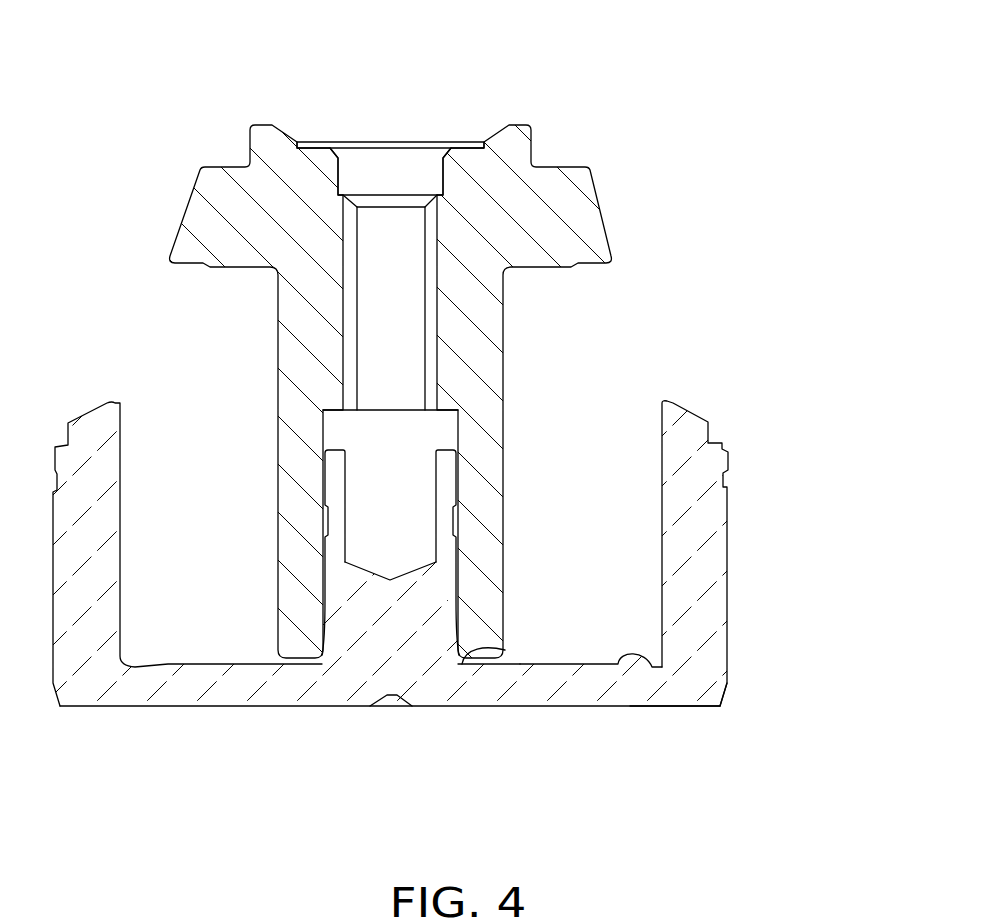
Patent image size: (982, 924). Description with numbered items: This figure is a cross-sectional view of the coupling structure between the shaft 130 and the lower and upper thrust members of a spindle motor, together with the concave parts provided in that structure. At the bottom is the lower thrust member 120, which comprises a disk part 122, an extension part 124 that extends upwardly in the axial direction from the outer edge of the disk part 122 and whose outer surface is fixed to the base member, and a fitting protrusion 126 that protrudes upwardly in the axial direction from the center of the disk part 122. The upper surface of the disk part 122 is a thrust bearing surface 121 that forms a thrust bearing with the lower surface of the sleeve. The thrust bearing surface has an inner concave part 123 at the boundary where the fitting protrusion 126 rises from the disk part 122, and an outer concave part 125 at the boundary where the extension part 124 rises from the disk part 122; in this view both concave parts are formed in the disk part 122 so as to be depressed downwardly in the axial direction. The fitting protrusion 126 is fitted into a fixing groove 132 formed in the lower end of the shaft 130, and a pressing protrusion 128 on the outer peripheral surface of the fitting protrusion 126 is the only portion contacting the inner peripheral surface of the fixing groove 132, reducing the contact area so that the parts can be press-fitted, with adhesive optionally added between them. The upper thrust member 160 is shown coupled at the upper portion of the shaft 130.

The lower thrust member 120 is at (471, 601).
The thrust bearing surface 121 is at (223, 660).
The disk part 122 is at (633, 683).
The inner concave part 123 is at (465, 657).
The extension part 124 is at (703, 543).
The outer concave part 125 is at (653, 664).
The fitting protrusion 126 is at (447, 493).
The pressing protrusion 128 is at (335, 478).
The shaft 130 is at (463, 305).
The fixing groove 132 is at (458, 413).
The upper thrust member 160 is at (550, 193).